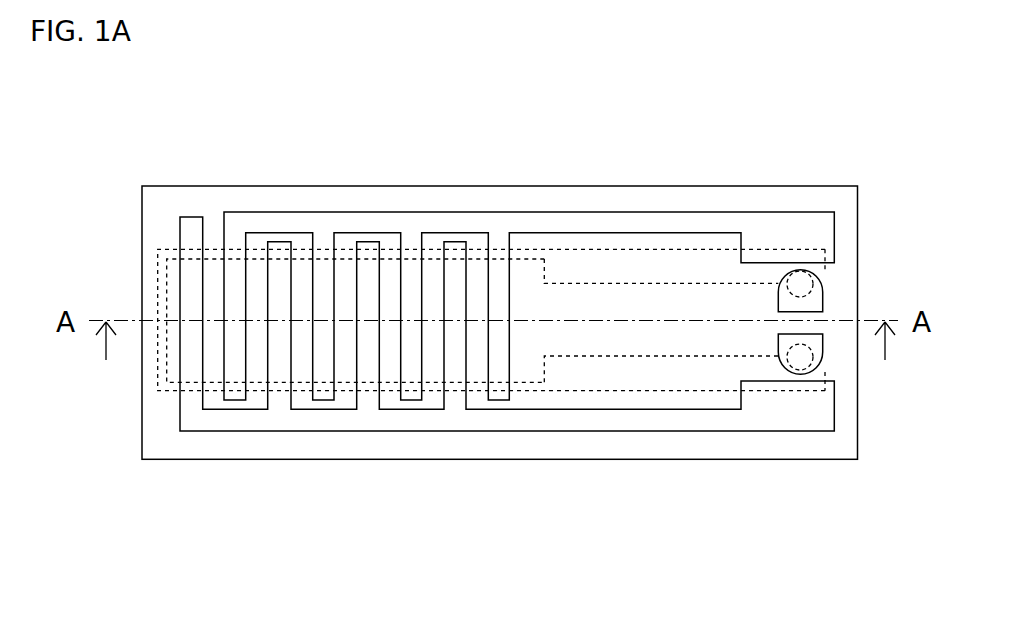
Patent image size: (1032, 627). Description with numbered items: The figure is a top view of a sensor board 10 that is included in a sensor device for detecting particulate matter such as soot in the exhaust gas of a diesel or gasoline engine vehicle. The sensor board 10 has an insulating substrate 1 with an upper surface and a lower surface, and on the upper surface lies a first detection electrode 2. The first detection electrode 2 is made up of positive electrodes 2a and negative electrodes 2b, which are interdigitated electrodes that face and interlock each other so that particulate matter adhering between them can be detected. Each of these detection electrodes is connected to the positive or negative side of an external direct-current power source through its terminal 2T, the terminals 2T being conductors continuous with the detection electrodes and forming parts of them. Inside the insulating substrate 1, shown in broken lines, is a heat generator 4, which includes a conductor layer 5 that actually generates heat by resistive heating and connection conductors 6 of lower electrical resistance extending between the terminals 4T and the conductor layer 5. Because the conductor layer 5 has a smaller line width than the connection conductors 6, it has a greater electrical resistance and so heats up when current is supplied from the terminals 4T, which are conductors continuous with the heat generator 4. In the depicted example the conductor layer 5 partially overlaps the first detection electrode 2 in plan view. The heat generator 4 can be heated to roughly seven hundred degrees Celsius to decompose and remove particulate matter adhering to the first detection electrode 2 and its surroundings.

The insulating substrate 1 is at (822, 197).
The first detection electrode 2 is at (507, 313).
The positive electrode 2a is at (497, 292).
The negative electrode 2b is at (278, 359).
The terminal 2T is at (797, 232).
The heat generator 4 is at (393, 562).
The terminal 4T is at (807, 300).
The conductor layer 5 is at (362, 385).
The connection conductor 6 is at (598, 381).
The sensor board 10 is at (211, 133).